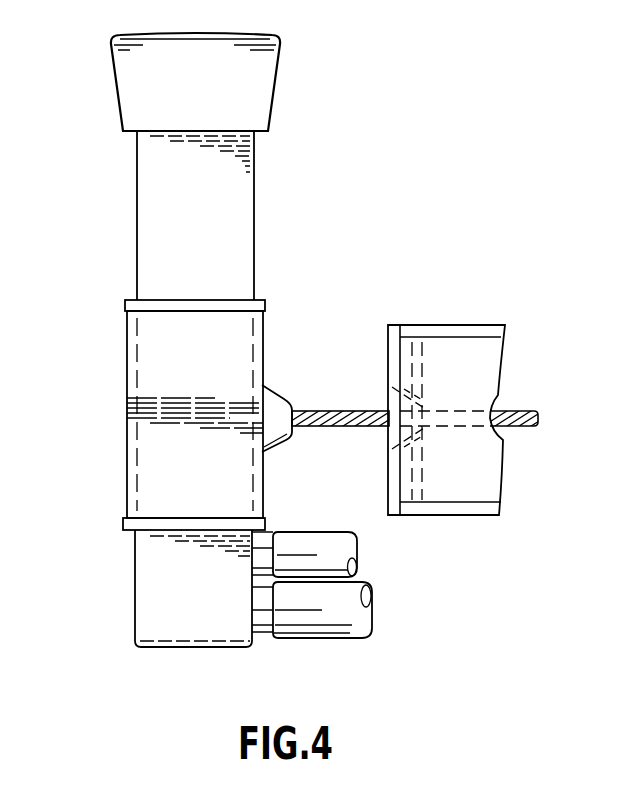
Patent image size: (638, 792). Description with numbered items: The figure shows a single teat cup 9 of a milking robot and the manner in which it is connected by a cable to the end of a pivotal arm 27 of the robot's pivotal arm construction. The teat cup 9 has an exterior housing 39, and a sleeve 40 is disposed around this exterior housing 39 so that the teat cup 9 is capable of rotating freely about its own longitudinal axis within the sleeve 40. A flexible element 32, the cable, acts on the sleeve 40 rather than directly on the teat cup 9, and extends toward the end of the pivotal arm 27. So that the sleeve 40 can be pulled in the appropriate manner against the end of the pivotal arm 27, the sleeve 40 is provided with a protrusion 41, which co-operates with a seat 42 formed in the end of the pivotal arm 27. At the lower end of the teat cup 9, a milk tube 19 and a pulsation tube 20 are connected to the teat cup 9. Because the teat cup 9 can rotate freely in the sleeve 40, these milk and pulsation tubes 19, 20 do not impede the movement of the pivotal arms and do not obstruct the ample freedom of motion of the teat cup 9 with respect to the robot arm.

The teat cup 9 is at (255, 82).
The exterior housing 39 is at (243, 255).
The sleeve 40 is at (242, 362).
The protrusion 41 is at (277, 410).
The seat 42 is at (397, 403).
The flexible element 32 is at (362, 422).
The pivotal arm 27 is at (466, 352).
The pulsation tube 20 is at (299, 543).
The milk tube 19 is at (313, 623).